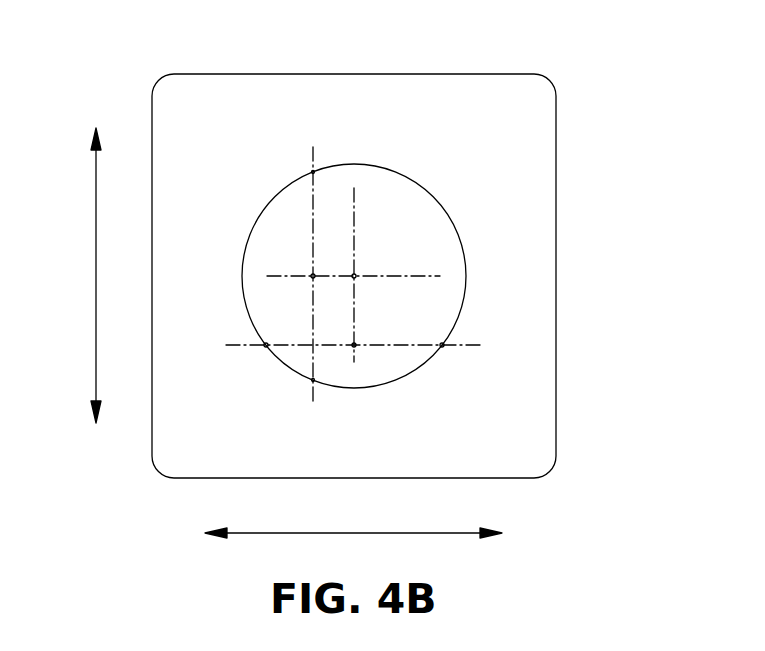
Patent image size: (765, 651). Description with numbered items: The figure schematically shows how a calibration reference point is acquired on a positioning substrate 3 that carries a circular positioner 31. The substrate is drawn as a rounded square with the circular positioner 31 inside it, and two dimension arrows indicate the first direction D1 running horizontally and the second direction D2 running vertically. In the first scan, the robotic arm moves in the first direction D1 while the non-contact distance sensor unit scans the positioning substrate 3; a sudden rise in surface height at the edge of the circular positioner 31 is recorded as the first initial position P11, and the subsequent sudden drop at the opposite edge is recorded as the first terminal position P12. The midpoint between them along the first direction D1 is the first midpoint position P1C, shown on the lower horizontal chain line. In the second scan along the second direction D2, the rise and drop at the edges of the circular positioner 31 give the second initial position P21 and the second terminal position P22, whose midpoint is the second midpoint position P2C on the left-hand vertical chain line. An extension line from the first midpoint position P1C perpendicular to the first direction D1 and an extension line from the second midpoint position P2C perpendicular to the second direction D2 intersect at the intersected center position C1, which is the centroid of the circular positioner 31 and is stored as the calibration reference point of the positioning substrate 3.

The positioning substrate 3 is at (530, 192).
The circular positioner 31 is at (405, 175).
The intersected center position C1 is at (354, 276).
The first initial position P11 is at (265, 346).
The first terminal position P12 is at (442, 346).
The first midpoint position P1C is at (354, 345).
The second initial position P21 is at (312, 382).
The second terminal position P22 is at (313, 171).
The second midpoint position P2C is at (313, 276).
The first direction D1 is at (353, 523).
The second direction D2 is at (78, 275).